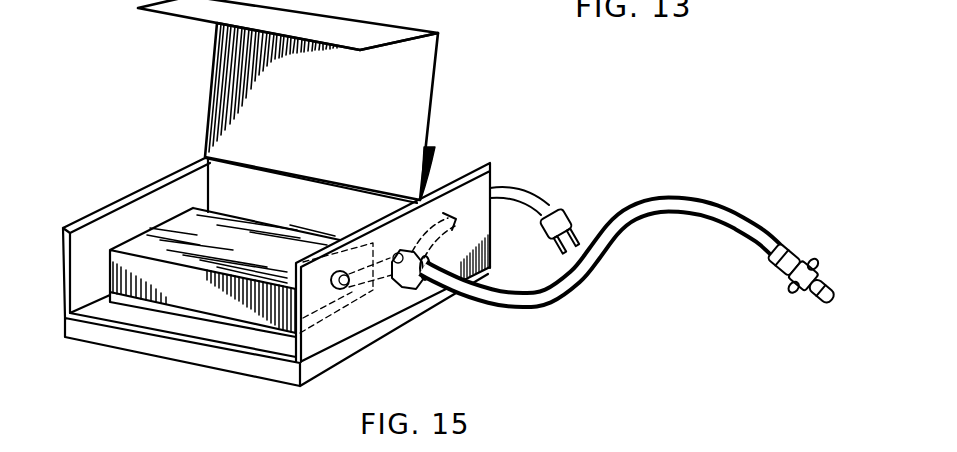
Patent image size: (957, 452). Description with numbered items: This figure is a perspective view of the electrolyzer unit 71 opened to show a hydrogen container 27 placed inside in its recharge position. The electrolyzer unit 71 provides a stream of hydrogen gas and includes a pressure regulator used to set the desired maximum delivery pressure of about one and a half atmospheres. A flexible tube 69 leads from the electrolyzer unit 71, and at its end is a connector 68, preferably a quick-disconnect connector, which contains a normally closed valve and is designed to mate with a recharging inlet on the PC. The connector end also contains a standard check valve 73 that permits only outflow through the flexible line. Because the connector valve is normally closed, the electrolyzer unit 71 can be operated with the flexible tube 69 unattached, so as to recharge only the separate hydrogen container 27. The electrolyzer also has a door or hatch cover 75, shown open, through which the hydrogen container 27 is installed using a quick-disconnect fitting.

The hydrogen container 27 is at (180, 297).
The connector 68 is at (800, 283).
The flexible tube 69 is at (670, 197).
The electrolyzer unit 71 is at (430, 306).
The check valve 73 is at (797, 250).
The hatch cover 75 is at (223, 13).